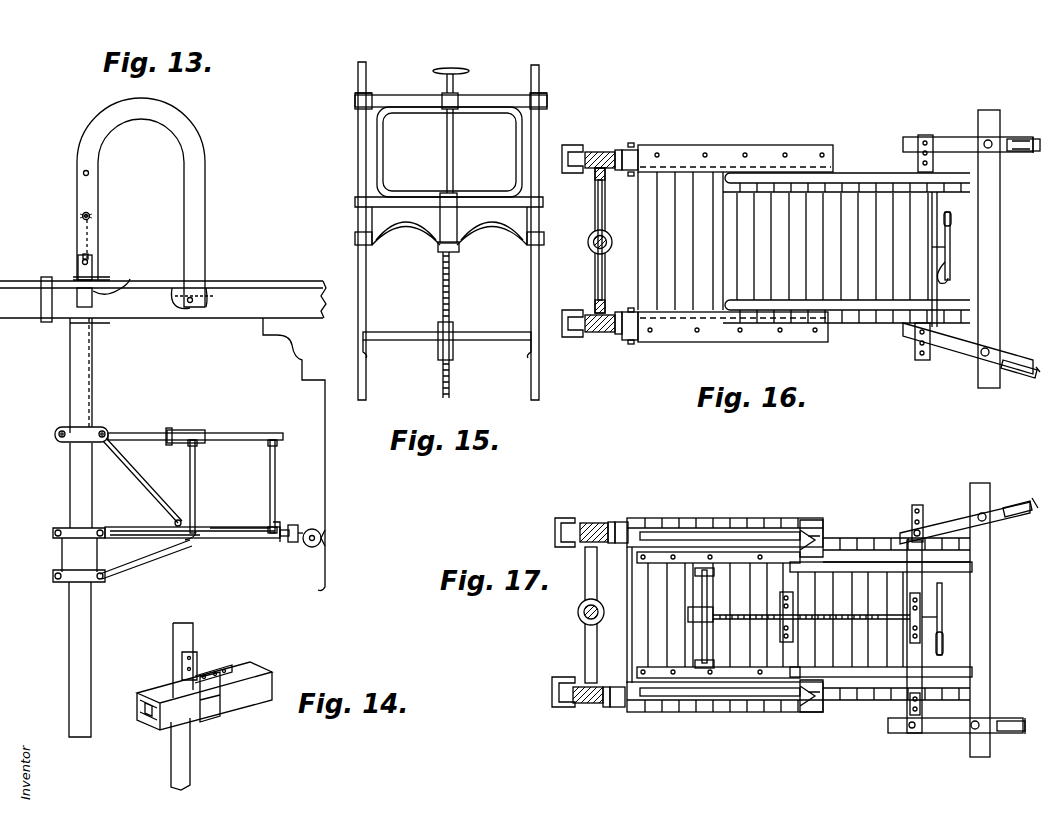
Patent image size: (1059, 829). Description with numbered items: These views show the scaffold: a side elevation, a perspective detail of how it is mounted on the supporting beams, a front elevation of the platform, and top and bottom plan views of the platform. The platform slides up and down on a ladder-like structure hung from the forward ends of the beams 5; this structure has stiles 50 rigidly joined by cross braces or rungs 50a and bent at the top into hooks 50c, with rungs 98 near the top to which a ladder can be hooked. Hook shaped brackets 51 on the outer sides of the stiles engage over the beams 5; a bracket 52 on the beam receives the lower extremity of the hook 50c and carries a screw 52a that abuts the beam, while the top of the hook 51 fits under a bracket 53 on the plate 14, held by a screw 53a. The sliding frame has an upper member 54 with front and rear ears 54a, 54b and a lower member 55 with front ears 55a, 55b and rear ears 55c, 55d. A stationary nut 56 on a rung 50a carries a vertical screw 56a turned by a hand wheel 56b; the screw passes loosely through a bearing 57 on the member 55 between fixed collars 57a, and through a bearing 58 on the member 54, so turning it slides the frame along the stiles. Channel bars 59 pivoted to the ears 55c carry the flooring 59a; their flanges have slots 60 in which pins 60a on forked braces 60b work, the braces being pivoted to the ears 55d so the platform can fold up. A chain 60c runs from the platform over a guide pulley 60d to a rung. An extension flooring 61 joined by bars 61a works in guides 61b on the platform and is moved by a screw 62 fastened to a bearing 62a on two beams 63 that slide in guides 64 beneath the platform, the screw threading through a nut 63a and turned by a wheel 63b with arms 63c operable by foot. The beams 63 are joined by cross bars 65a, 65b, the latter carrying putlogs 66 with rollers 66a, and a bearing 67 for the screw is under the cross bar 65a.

In FIG. 13, the beam 5 is at (218, 318).
In FIG. 14, the beam 5 is at (265, 682).
In FIG. 13, the plate 14 is at (30, 272).
In FIG. 14, the plate 14 is at (158, 690).
In FIG. 13, the stile 50 is at (70, 371).
In FIG. 14, the stile 50 is at (190, 630).
In FIG. 15, the stile 50 is at (358, 134).
In FIG. 16, the stile 50 is at (590, 335).
In FIG. 17, the stile 50 is at (590, 522).
In FIG. 15, the cross brace or rung 50a is at (392, 333).
In FIG. 13, the hook 50c is at (200, 186).
In FIG. 13, the hook shaped bracket 51 is at (100, 285).
In FIG. 13, the bracket 52 is at (178, 290).
In FIG. 13, the screw 52a is at (192, 296).
In FIG. 13, the bracket 53 is at (77, 272).
In FIG. 14, the bracket 53 is at (220, 668).
In FIG. 13, the screw 53a is at (78, 256).
In FIG. 14, the screw 53a is at (205, 670).
In FIG. 13, the upper transversely extending member 54 is at (78, 436).
In FIG. 15, the upper transversely extending member 54 is at (493, 110).
In FIG. 13, the perforated ear 54a is at (56, 433).
In FIG. 15, the perforated ear 54a is at (541, 100).
In FIG. 13, the perforated ear 54b is at (106, 431).
In FIG. 13, the lower transversely extending member 55 is at (65, 580).
In FIG. 15, the lower transversely extending member 55 is at (498, 228).
In FIG. 16, the lower transversely extending member 55 is at (612, 336).
In FIG. 17, the lower transversely extending member 55 is at (590, 545).
In FIG. 13, the perforated ear 55a is at (53, 532).
In FIG. 15, the perforated ear 55a is at (540, 205).
In FIG. 16, the perforated ear 55a is at (565, 312).
In FIG. 13, the perforated ear 55b is at (53, 576).
In FIG. 15, the perforated ear 55b is at (543, 245).
In FIG. 16, the perforated ear 55b is at (586, 250).
In FIG. 17, the perforated ear 55b is at (560, 526).
In FIG. 13, the ear 55c is at (103, 528).
In FIG. 16, the ear 55c is at (636, 148).
In FIG. 13, the ear 55d is at (102, 582).
In FIG. 17, the ear 55d is at (625, 520).
In FIG. 15, the stationary nut 56 is at (438, 355).
In FIG. 15, the vertical screw 56a is at (450, 285).
In FIG. 16, the vertical screw 56a is at (604, 252).
In FIG. 17, the vertical screw 56a is at (580, 612).
In FIG. 15, the hand wheel 56b is at (438, 70).
In FIG. 15, the bearing 57 is at (458, 212).
In FIG. 15, the fixed collar 57a is at (438, 238).
In FIG. 15, the bearing 58 is at (462, 100).
In FIG. 13, the channel bar 59 is at (135, 538).
In FIG. 16, the channel bar 59 is at (640, 345).
In FIG. 17, the channel bar 59 is at (683, 518).
In FIG. 16, the flooring 59a is at (680, 241).
In FIG. 17, the flooring 59a is at (640, 632).
In FIG. 13, the longitudinal slot 60 is at (148, 580).
In FIG. 17, the pin 60a is at (815, 522).
In FIG. 13, the brace 60b is at (170, 432).
In FIG. 17, the brace 60b is at (740, 532).
In FIG. 13, the chain 60c is at (175, 432).
In FIG. 13, the guide pulley 60d is at (103, 440).
In FIG. 13, the flooring 61 is at (235, 528).
In FIG. 16, the flooring 61 is at (832, 246).
In FIG. 17, the flooring 61 is at (895, 690).
In FIG. 13, the longitudinal bar 61a is at (210, 528).
In FIG. 16, the longitudinal bar 61a is at (860, 180).
In FIG. 17, the longitudinal bar 61a is at (896, 619).
In FIG. 13, the guide 61b is at (190, 528).
In FIG. 16, the guide 61b is at (775, 160).
In FIG. 16, the screw 62 is at (945, 282).
In FIG. 17, the screw 62 is at (858, 622).
In FIG. 17, the bearing 62a is at (710, 600).
In FIG. 13, the longitudinal beam 63 is at (255, 540).
In FIG. 16, the longitudinal beam 63 is at (934, 259).
In FIG. 17, the longitudinal beam 63 is at (858, 565).
In FIG. 17, the nut 63a is at (795, 610).
In FIG. 13, the operating wheel 63b is at (280, 522).
In FIG. 16, the operating wheel 63b is at (950, 240).
In FIG. 17, the operating wheel 63b is at (942, 607).
In FIG. 16, the radially extending arm 63c is at (959, 212).
In FIG. 17, the radially extending arm 63c is at (943, 650).
In FIG. 17, the guide 64 is at (650, 560).
In FIG. 13, the cross bar 65a is at (268, 545).
In FIG. 16, the cross bar 65a is at (920, 360).
In FIG. 17, the cross bar 65a is at (920, 504).
In FIG. 13, the cross bar 65b is at (326, 528).
In FIG. 16, the cross bar 65b is at (988, 330).
In FIG. 17, the cross bar 65b is at (985, 592).
In FIG. 13, the putlog 66 is at (285, 545).
In FIG. 16, the putlog 66 is at (945, 137).
In FIG. 17, the putlog 66 is at (953, 528).
In FIG. 16, the roller 66a is at (1035, 136).
In FIG. 17, the roller 66a is at (1033, 516).
In FIG. 17, the bearing 67 is at (908, 622).
In FIG. 13, the rung 98 is at (90, 214).